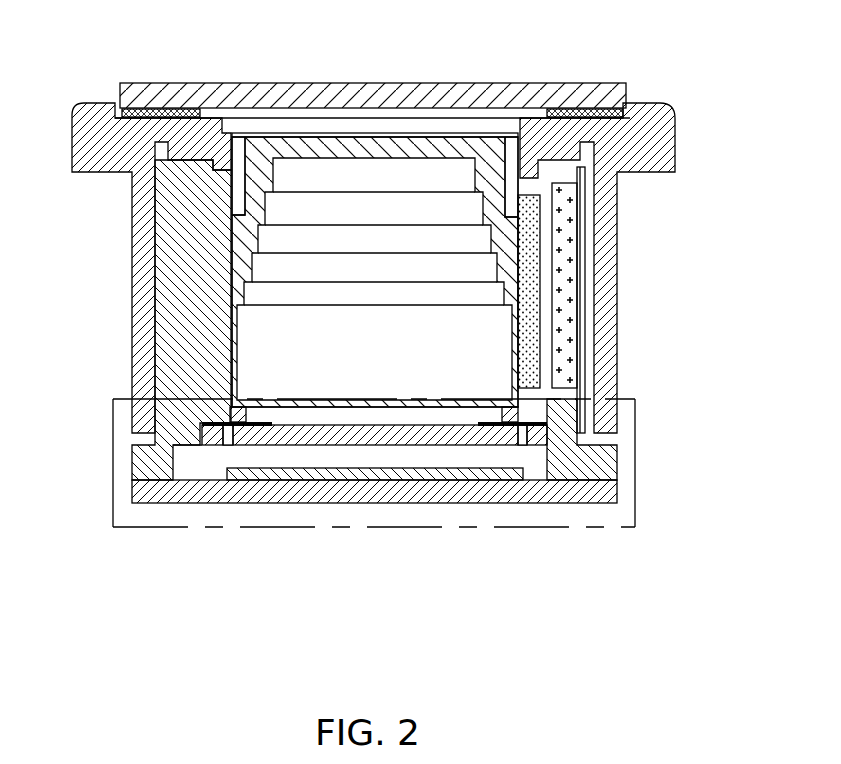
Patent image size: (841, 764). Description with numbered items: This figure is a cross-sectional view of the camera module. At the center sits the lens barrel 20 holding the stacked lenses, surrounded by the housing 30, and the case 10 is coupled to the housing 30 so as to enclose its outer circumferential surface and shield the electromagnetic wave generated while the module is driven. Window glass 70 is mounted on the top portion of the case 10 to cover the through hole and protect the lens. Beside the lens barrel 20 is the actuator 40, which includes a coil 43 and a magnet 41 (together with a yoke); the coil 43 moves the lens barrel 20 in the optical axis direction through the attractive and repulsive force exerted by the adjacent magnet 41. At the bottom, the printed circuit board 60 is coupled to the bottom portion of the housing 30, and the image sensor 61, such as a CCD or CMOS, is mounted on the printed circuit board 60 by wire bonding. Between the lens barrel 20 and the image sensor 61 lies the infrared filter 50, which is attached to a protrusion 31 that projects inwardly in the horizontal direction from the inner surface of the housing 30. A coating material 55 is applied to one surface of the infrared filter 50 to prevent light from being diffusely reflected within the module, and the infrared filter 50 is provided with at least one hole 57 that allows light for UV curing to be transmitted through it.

The case 10 is at (80, 112).
The window glass 70 is at (553, 97).
The lens barrel 20 is at (253, 190).
The housing 30 is at (185, 237).
The protrusion 31 is at (232, 412).
The hole 57 is at (225, 423).
The coating material 55 is at (228, 432).
The infrared filter 50 is at (312, 433).
The image sensor 61 is at (392, 475).
The printed circuit board 60 is at (485, 490).
The magnet 41 is at (525, 242).
The coil 43 is at (563, 281).
The actuator 40 is at (685, 227).